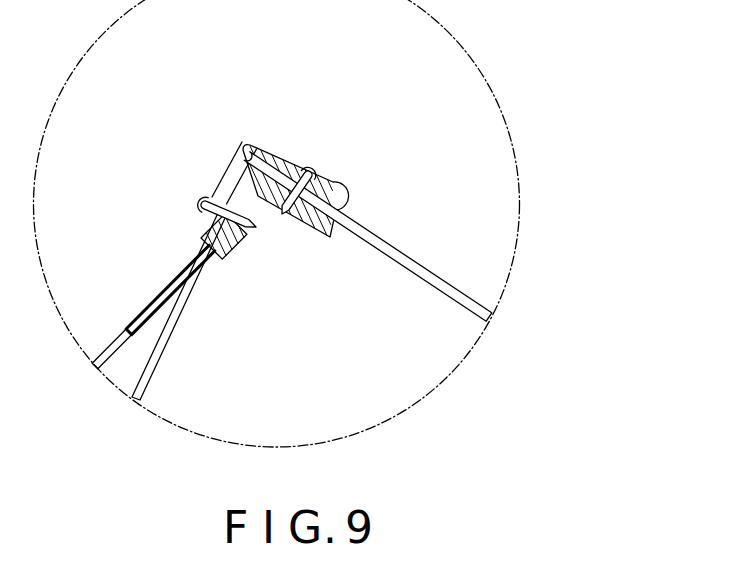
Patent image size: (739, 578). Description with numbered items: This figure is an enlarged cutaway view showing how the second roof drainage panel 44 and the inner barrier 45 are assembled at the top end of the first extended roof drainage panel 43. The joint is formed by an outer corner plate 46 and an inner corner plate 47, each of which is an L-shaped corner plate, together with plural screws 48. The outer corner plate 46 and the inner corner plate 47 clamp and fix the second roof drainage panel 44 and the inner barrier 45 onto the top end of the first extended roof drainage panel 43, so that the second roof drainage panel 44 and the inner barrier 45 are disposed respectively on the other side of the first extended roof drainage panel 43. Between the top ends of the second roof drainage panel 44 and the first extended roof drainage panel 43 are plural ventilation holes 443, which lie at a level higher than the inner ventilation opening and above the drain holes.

The first extended roof drainage panel 43 is at (397, 250).
The second roof drainage panel 44 is at (113, 336).
The ventilation holes 443 is at (180, 262).
The inner barrier 45 is at (188, 310).
The outer corner plate 46 is at (270, 152).
The inner corner plate 47 is at (263, 200).
The screws 48 is at (314, 168).